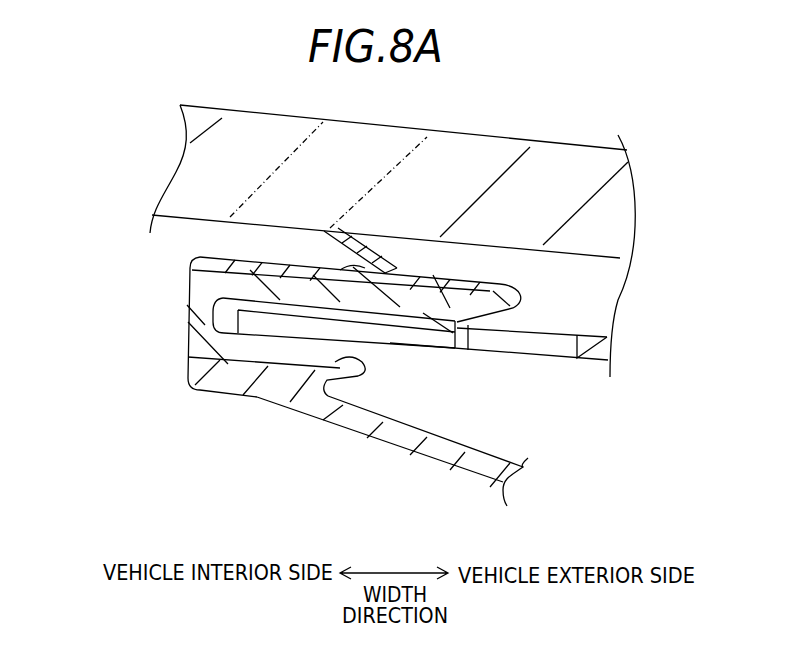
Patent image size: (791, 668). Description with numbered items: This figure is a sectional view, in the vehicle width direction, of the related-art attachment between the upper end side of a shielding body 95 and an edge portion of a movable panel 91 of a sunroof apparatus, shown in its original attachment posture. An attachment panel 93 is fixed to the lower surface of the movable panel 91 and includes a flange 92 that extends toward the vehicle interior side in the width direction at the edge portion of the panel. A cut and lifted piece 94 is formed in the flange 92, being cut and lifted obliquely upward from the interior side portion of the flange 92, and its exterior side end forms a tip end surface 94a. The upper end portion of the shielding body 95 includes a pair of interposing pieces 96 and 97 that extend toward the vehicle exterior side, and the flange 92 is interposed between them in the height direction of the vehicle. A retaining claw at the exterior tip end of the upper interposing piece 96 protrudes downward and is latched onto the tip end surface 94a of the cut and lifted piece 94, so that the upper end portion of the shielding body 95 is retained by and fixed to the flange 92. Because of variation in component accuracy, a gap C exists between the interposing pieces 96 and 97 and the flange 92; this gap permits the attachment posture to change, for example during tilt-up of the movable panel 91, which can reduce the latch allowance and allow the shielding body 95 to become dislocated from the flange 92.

The movable panel 91 is at (583, 165).
The flange 92 is at (354, 327).
The attachment panel 93 is at (499, 344).
The cut and lifted piece 94 is at (417, 325).
The tip end surface 94a is at (461, 320).
The shielding body 95 is at (387, 437).
The interposing piece 96 is at (303, 262).
The interposing piece 97 is at (237, 352).
The gap C is at (250, 298).